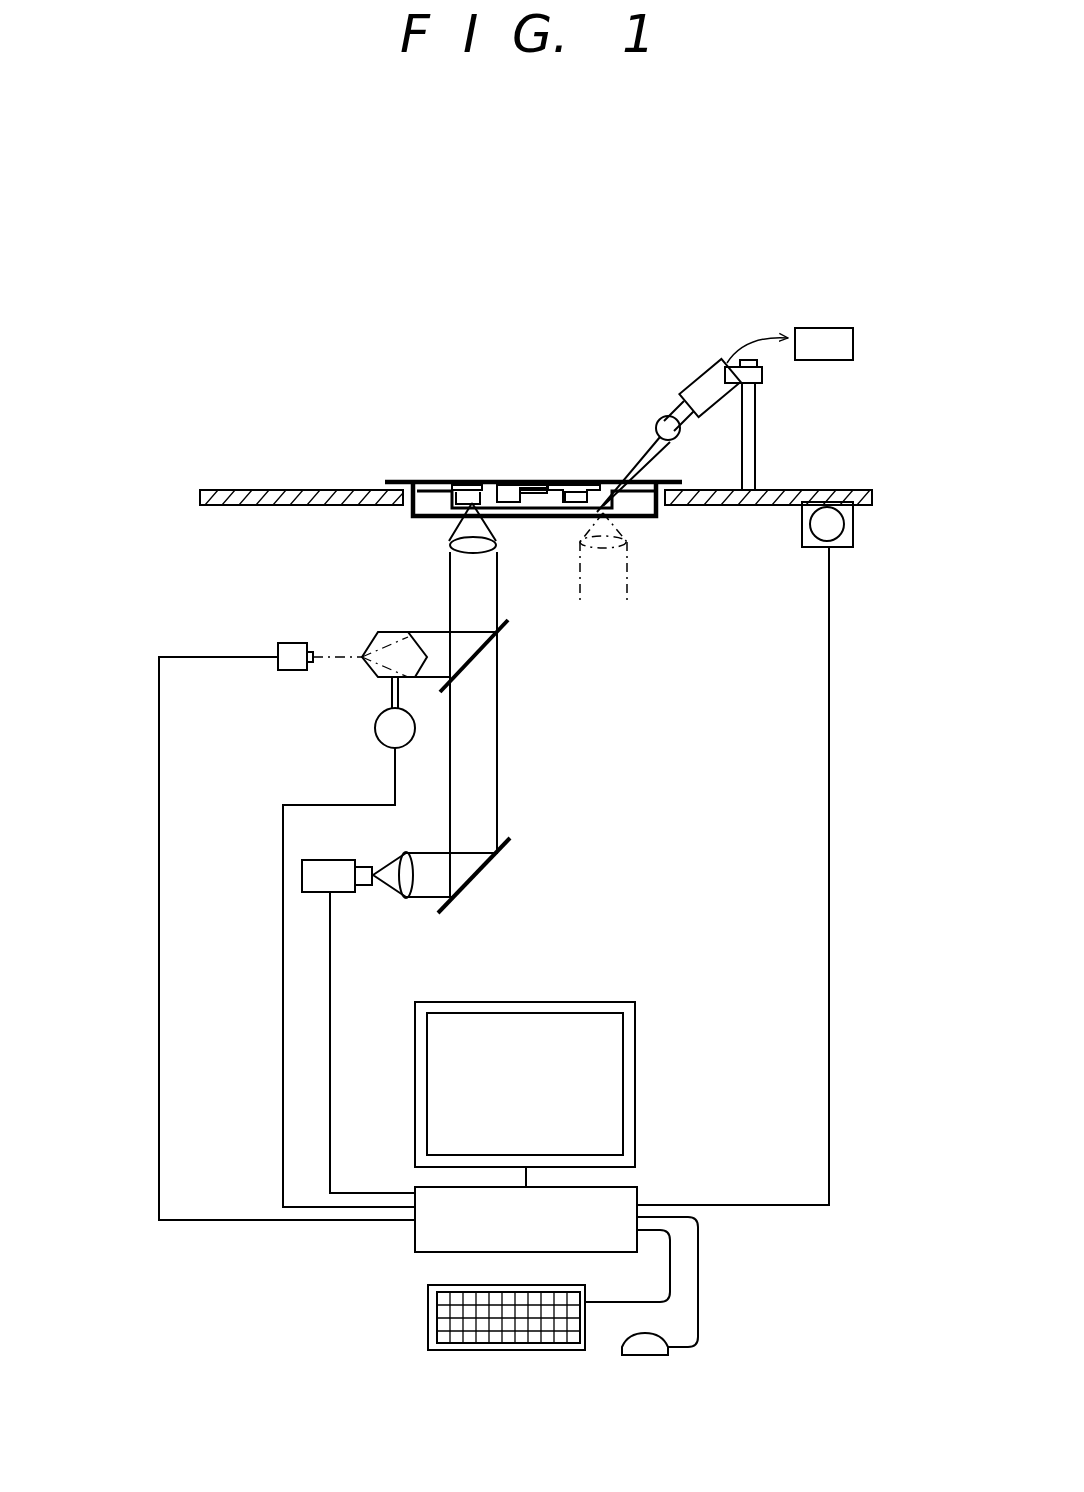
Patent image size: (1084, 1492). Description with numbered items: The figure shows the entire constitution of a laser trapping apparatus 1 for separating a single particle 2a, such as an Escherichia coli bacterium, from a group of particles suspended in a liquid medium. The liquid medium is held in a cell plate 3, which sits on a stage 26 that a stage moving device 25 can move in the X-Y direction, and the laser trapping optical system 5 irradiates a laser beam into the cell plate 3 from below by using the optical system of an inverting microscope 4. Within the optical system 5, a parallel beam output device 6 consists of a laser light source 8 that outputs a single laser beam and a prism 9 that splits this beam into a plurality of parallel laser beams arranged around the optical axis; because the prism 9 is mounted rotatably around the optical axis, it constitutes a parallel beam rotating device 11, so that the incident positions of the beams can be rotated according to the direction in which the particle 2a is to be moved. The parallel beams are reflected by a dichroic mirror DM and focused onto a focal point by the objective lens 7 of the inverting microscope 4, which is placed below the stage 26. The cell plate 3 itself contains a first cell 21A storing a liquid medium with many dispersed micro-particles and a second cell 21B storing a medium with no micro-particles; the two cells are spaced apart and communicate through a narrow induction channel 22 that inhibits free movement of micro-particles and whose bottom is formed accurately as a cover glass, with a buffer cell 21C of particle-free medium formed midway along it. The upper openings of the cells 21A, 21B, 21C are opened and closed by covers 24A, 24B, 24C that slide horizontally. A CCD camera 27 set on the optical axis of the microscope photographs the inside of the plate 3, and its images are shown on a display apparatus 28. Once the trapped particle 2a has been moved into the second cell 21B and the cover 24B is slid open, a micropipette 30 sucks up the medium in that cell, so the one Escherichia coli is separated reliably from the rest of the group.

The laser trapping apparatus 1 is at (305, 436).
The particle 2a is at (472, 478).
The cell plate 3 is at (646, 532).
The inverting microscope 4 is at (516, 781).
The laser trapping optical system 5 is at (298, 690).
The parallel beam output device 6 is at (390, 567).
The objective lens 7 is at (480, 557).
The laser light source 8 is at (293, 655).
The prism 9 is at (388, 638).
The parallel beam rotating device 11 is at (385, 730).
The first cell 21A is at (450, 485).
The second cell 21B is at (603, 480).
The buffer cell 21C is at (508, 480).
The induction channel 22 is at (532, 522).
The cover 24A is at (462, 490).
The cover 24B is at (578, 480).
The cover 24C is at (527, 480).
The stage moving device 25 is at (829, 530).
The stage 26 is at (820, 487).
The CCD camera 27 is at (340, 882).
The display apparatus 28 is at (600, 1053).
The micropipette 30 is at (710, 380).
The dichroic mirror DM is at (463, 668).